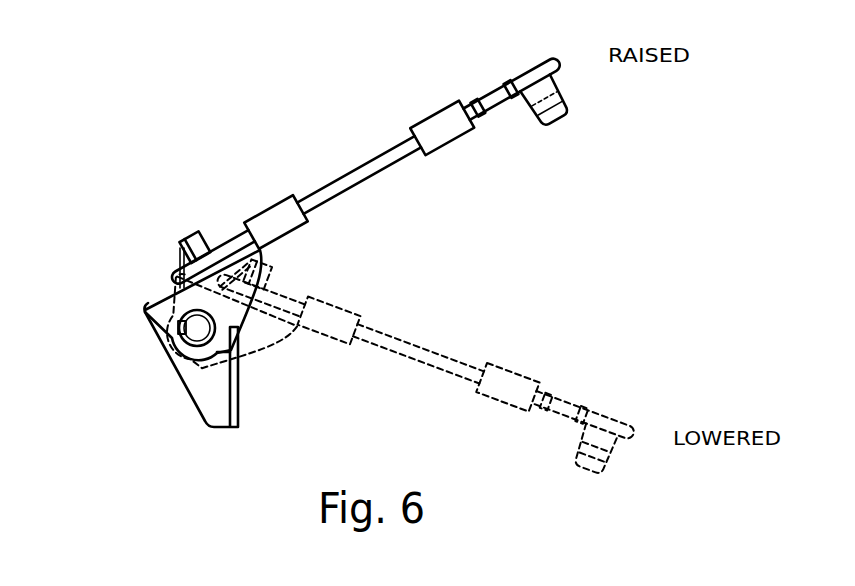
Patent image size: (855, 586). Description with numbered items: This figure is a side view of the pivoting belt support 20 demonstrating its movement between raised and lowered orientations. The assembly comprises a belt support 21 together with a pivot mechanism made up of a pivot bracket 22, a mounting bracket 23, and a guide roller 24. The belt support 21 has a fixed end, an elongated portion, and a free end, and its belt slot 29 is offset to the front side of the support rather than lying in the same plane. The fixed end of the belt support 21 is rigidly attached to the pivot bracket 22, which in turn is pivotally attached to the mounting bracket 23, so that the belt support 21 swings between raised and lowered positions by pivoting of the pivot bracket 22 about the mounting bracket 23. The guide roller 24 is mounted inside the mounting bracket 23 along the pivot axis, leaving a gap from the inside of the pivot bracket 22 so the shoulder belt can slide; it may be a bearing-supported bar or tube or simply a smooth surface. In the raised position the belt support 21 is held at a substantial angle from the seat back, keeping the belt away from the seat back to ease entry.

The pivoting belt support 20 is at (173, 135).
The belt support 21 is at (383, 156).
The pivot bracket 22 is at (190, 298).
The mounting bracket 23 is at (200, 392).
The guide roller 24 is at (178, 328).
The belt slot 29 is at (530, 114).